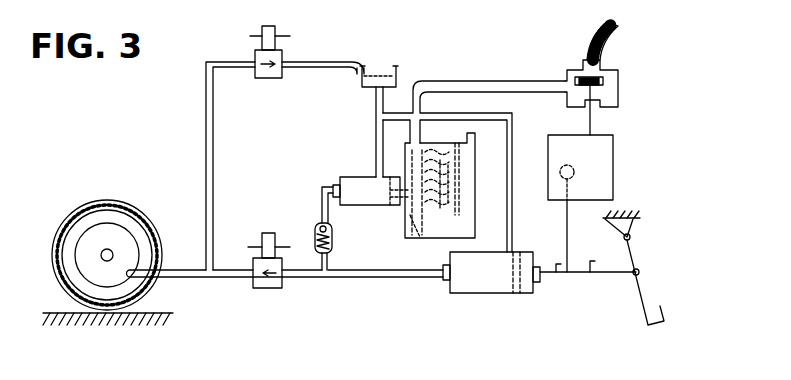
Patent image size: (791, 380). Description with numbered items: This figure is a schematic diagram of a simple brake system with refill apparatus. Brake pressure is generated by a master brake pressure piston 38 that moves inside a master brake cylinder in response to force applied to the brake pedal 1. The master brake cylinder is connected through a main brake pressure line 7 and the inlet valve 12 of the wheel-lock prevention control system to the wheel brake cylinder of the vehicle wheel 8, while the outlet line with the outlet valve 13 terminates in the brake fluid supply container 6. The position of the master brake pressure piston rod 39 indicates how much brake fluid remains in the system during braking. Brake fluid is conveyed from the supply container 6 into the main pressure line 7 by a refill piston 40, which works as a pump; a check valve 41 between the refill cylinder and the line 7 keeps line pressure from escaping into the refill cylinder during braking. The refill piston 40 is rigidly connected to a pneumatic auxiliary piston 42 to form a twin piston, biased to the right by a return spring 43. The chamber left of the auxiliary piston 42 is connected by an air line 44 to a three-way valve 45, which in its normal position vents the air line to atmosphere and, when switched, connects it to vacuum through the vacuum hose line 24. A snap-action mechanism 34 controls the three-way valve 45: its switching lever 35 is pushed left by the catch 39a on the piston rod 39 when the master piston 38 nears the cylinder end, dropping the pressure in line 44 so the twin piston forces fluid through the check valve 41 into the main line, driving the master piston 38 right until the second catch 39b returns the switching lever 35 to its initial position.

The brake pedal 1 is at (641, 283).
The brake fluid supply container 6 is at (396, 68).
The main brake pressure line 7 is at (374, 277).
The vehicle wheel 8 is at (132, 223).
The inlet valve 12 is at (270, 288).
The outlet valve 13 is at (273, 78).
The vacuum hose line 24 is at (587, 44).
The snap-action mechanism 34 is at (613, 165).
The switching lever 35 is at (566, 238).
The master brake pressure piston 38 is at (512, 292).
The master brake pressure piston rod 39 is at (612, 276).
The catch 39a is at (592, 259).
The second catch 39b is at (557, 275).
The refill piston 40 is at (392, 201).
The check valve 41 is at (317, 236).
The pneumatic auxiliary piston 42 is at (457, 221).
The return spring 43 is at (440, 199).
The air line 44 is at (505, 81).
The three-way valve 45 is at (619, 74).